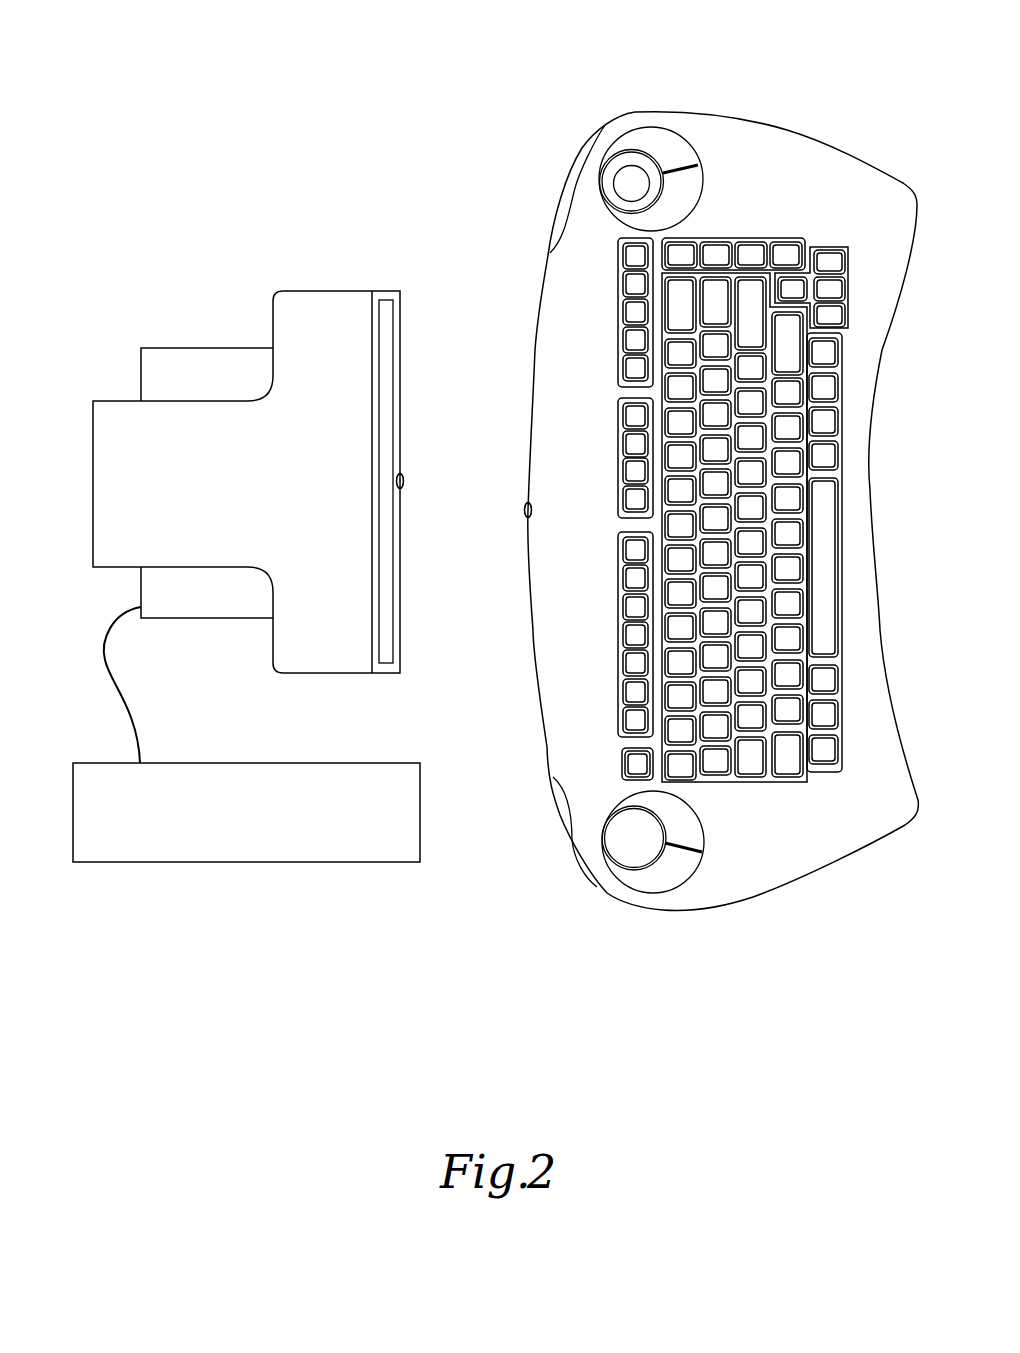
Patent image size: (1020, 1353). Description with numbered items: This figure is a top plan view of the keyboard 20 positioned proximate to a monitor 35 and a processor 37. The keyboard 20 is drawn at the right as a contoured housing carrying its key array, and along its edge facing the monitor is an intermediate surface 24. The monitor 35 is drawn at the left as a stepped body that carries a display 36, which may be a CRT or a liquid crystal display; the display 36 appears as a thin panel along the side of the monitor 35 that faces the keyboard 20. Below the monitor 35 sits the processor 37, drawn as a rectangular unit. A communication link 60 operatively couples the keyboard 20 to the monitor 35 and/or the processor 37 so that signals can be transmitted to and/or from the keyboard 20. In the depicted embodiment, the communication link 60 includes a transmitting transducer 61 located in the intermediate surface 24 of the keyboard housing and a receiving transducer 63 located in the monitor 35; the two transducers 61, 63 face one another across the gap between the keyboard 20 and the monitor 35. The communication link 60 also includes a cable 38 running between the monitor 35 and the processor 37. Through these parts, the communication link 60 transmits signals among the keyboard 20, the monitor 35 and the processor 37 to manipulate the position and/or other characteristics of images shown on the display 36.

The keyboard 20 is at (700, 97).
The intermediate surface 24 is at (535, 660).
The monitor 35 is at (92, 503).
The display 36 is at (387, 312).
The processor 37 is at (233, 863).
The cable 38 is at (105, 672).
The communication link 60 is at (515, 468).
The transmitting transducer 61 is at (525, 515).
The receiving transducer 63 is at (403, 483).